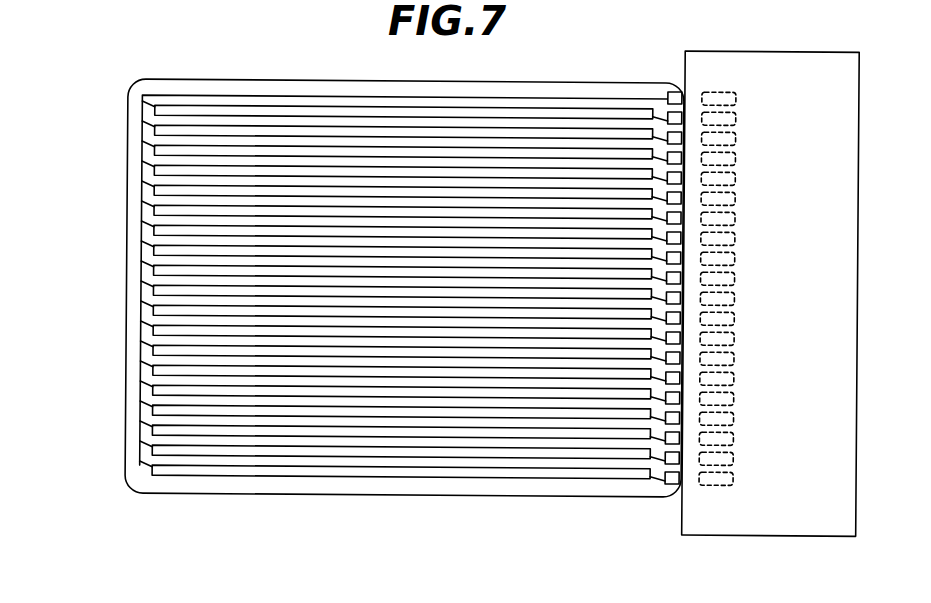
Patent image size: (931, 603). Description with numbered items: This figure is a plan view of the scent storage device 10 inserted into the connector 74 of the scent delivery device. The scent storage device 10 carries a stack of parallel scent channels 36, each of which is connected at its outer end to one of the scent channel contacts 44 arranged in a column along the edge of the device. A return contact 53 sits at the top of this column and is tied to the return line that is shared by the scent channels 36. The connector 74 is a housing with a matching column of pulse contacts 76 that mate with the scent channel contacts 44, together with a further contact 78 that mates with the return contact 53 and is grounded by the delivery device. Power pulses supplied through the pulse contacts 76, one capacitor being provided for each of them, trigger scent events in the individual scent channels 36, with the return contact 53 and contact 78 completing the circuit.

The scent storage device 10 is at (128, 273).
The scent channel 36 is at (360, 470).
The return contact 53 is at (676, 95).
The scent channel contacts 44 is at (673, 485).
The connector 74 is at (815, 502).
The pulse contacts 76 is at (713, 486).
The contact 78 is at (714, 93).